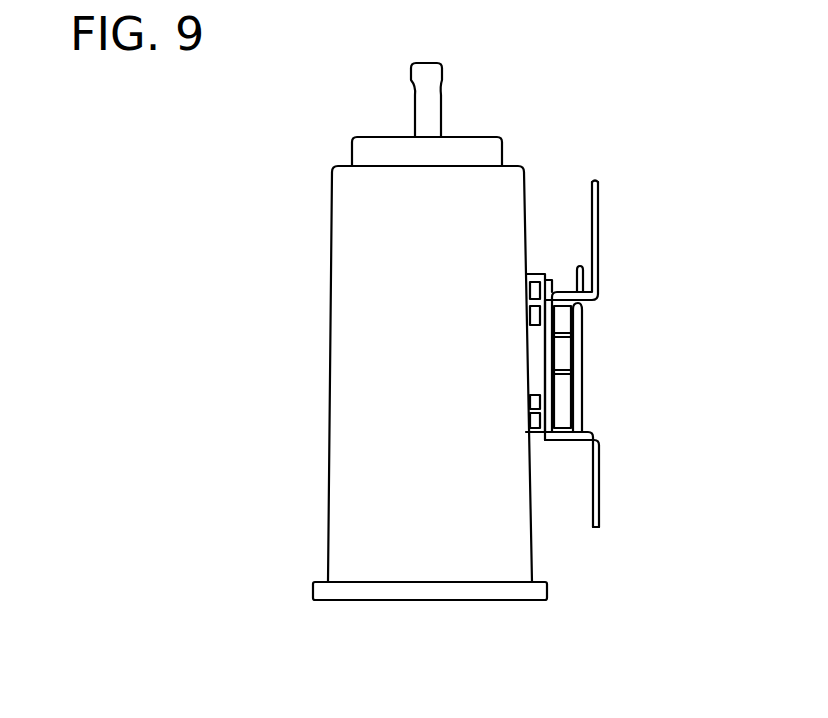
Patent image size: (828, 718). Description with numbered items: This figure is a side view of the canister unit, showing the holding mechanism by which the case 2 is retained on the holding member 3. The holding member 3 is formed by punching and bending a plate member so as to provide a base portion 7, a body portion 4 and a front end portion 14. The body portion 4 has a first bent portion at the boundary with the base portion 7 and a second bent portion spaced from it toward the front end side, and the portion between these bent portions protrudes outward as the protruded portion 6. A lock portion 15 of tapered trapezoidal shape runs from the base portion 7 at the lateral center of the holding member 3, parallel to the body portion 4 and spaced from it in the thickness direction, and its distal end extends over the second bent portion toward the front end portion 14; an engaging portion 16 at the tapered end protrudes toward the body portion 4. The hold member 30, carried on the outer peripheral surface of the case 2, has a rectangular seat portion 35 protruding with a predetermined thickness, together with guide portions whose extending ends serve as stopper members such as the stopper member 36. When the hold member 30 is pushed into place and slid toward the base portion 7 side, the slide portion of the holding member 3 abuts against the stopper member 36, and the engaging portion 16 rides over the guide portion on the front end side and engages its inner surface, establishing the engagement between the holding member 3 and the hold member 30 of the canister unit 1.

The lamp assembly 1 is at (505, 92).
The case 2 is at (330, 176).
The holding member 3 is at (611, 333).
The body portion 4 is at (555, 325).
The protruded portion 6 is at (543, 355).
The base portion 7 is at (602, 478).
The front end portion 14 is at (600, 190).
The lock portion 15 is at (587, 362).
The engaging portion 16 is at (588, 285).
The hold member 30 is at (563, 333).
The seat portion 35 is at (541, 437).
The stopper member 36 is at (565, 318).